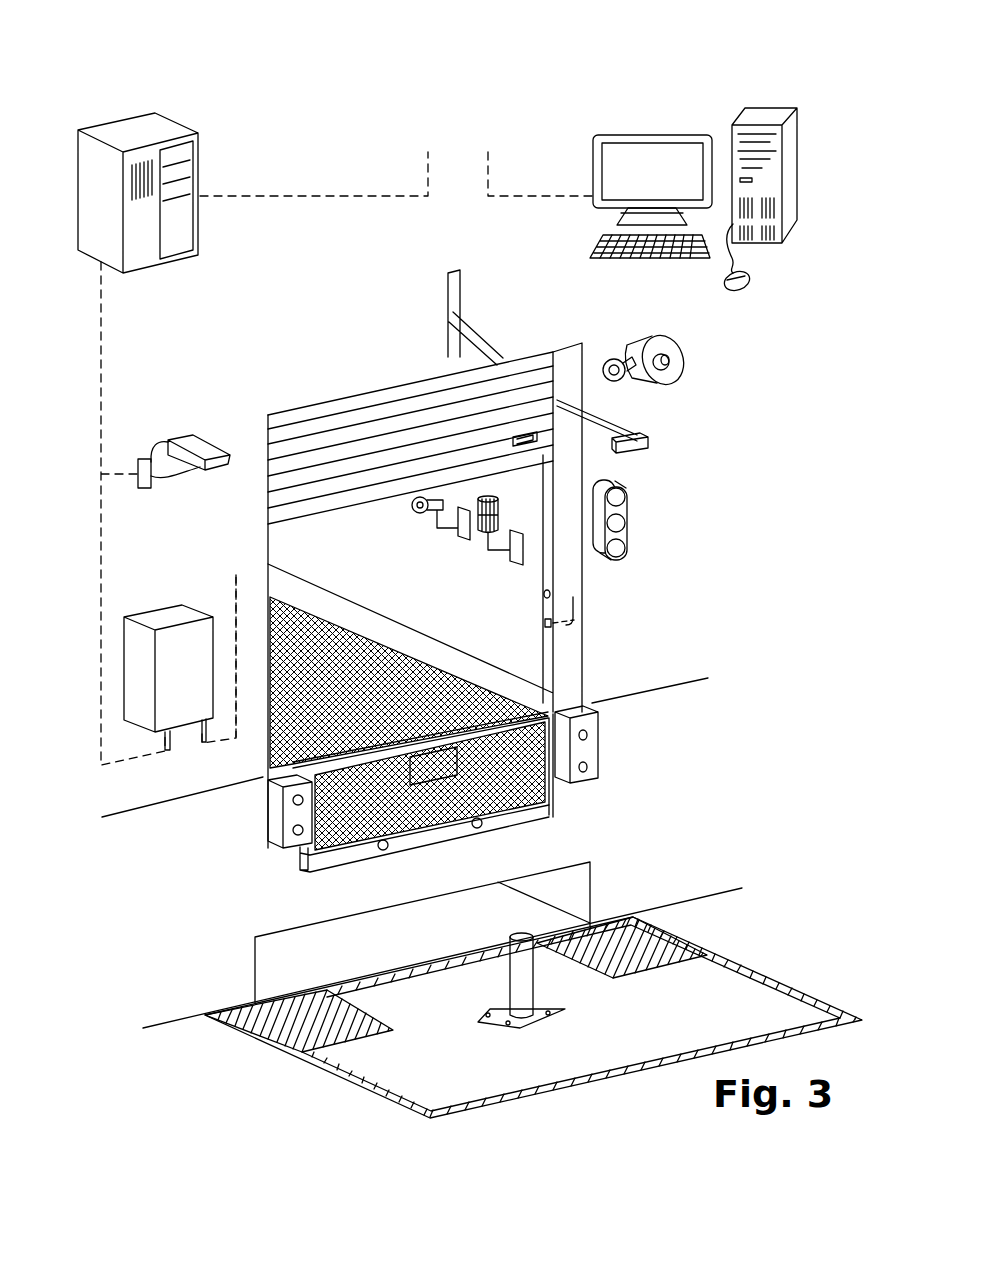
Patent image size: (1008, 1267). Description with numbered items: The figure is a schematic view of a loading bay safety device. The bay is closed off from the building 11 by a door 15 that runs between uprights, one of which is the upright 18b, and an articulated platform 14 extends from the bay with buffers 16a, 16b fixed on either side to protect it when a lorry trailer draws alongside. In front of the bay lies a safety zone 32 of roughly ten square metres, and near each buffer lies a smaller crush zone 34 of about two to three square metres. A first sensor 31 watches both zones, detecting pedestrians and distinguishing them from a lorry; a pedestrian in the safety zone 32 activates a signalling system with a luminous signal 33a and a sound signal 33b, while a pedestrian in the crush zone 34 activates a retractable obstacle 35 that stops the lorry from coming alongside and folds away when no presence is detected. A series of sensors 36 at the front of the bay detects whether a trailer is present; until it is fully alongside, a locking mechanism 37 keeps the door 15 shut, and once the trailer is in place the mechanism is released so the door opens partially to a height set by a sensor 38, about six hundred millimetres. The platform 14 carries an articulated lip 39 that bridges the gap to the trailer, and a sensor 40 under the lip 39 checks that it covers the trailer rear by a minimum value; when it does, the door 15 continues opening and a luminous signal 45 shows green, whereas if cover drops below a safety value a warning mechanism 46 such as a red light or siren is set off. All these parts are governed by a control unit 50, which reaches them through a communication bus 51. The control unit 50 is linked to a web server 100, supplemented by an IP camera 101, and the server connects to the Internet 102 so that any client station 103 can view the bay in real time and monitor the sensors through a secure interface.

The web server 100 is at (165, 130).
The IP camera 101 is at (195, 438).
The Internet 102 is at (437, 63).
The client station 103 is at (653, 133).
The building 11 is at (317, 631).
The articulated platform 14 is at (437, 680).
The door 15 is at (345, 427).
The buffer 16a is at (296, 813).
The buffer 16b is at (596, 740).
The upright 18b is at (548, 568).
The first sensor 31 is at (640, 433).
The safety zone 32 is at (748, 1010).
The luminous signal 33a is at (628, 515).
The sound signal 33b is at (688, 353).
The crush zone 34 is at (305, 1028).
The retractable obstacle 35 is at (525, 978).
The sensors 36 is at (478, 828).
The locking mechanism 37 is at (573, 597).
The sensor 38 is at (544, 595).
The lip 39 is at (540, 773).
The sensor 40 is at (445, 785).
The luminous signal 45 is at (491, 554).
The warning mechanism 46 is at (398, 507).
The control unit 50 is at (152, 612).
The communication bus 51 is at (236, 575).